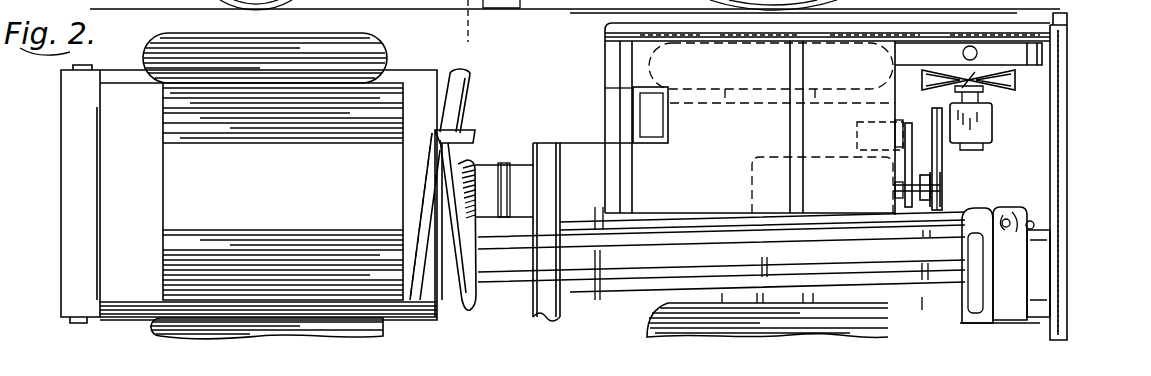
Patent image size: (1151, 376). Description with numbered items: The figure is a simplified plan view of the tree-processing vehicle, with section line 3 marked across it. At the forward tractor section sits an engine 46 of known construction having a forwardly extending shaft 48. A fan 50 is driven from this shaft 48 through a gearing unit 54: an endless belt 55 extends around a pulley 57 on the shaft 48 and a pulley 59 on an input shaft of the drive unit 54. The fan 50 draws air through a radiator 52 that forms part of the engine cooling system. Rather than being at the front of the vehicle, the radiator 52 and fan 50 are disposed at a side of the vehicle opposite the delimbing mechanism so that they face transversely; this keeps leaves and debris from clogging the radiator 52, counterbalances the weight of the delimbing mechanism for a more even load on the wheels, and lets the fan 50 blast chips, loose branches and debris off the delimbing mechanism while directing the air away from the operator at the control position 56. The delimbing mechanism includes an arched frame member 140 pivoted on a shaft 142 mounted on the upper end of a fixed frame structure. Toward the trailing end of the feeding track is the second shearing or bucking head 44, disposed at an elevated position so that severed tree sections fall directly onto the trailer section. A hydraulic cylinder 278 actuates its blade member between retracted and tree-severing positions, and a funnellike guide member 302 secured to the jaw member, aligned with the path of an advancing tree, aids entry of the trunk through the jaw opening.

The section line 3- 3 is at (490, 22).
The hydraulic cylinder 278 is at (470, 72).
The second shearing head 44 is at (468, 130).
The funnellike guide member 302 is at (473, 162).
The engine 46 is at (828, 167).
The control position 56 is at (658, 136).
The radiator 52 is at (1030, 57).
The fan 50 is at (1007, 79).
The gearing unit 54 is at (982, 125).
The pulley 59 is at (940, 112).
The endless belt 55 is at (940, 166).
The shaft 48 is at (940, 168).
The pulley 57 is at (941, 189).
The arched frame member 140 is at (1013, 222).
The shaft 142 is at (1025, 222).